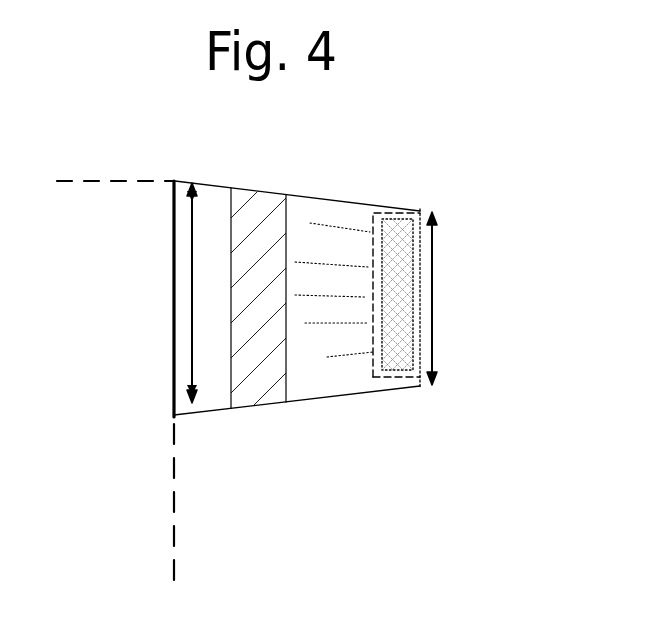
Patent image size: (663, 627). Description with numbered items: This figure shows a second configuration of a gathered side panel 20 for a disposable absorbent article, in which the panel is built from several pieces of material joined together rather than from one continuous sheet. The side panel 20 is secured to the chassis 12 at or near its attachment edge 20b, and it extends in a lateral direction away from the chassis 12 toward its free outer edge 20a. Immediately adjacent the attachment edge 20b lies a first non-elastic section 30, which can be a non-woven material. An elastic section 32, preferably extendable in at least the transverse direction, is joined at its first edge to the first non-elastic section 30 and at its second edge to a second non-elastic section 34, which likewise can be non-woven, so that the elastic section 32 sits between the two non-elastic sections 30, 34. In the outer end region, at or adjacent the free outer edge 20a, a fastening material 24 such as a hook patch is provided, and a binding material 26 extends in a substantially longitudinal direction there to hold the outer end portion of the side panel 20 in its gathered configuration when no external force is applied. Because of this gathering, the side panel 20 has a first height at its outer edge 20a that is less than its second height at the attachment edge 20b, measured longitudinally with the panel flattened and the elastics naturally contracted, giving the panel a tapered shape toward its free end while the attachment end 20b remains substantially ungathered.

The chassis 12 is at (165, 513).
The side panel 20 is at (318, 378).
The free outer edge 20a is at (398, 287).
The attachment edge 20b is at (174, 262).
The fastening material 24 is at (397, 363).
The binding material 26 is at (404, 217).
The first non-elastic section 30 is at (215, 390).
The elastic section 32 is at (261, 210).
The second non-elastic section 34 is at (340, 210).